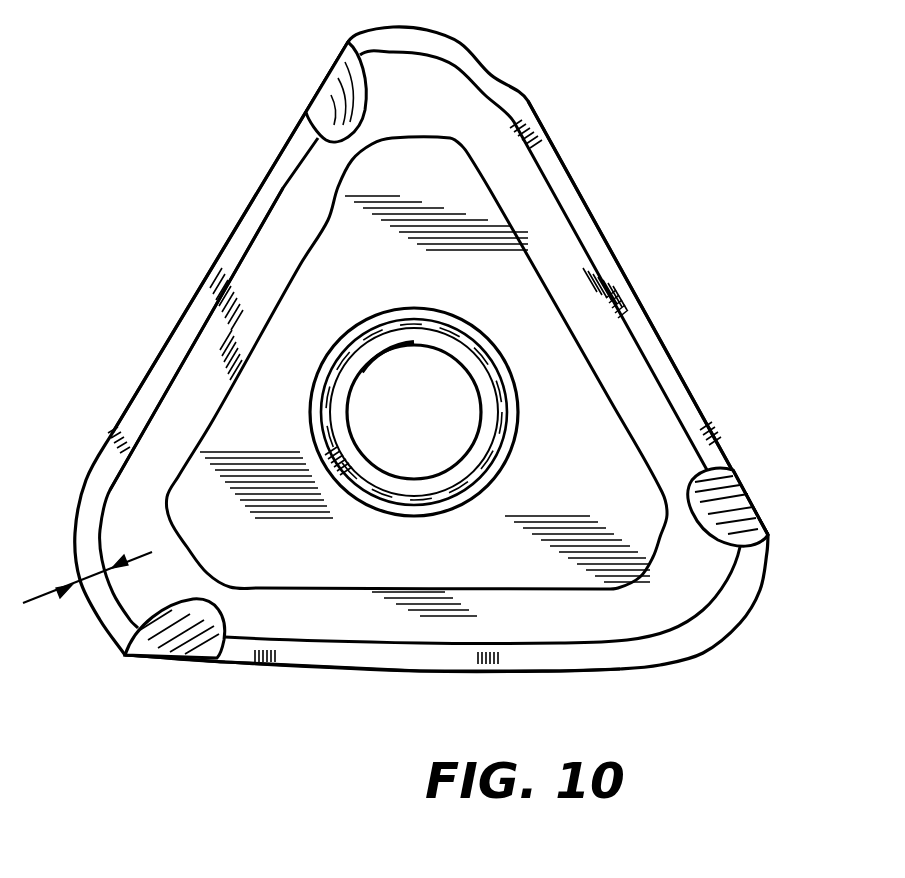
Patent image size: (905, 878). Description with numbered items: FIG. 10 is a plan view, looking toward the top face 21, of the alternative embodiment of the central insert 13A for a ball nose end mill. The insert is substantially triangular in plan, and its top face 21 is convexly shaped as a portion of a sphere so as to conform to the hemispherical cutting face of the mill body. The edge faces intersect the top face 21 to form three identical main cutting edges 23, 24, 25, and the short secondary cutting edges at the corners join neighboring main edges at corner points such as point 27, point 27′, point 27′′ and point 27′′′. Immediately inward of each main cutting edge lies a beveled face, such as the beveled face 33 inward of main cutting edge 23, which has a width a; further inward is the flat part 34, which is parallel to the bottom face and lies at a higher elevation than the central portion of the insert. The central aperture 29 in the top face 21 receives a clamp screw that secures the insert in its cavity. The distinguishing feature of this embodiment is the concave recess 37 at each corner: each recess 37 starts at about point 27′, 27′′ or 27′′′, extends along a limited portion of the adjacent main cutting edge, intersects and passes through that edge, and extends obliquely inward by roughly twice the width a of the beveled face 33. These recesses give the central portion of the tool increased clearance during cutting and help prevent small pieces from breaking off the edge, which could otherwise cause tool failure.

The central insert 13A is at (622, 246).
The top face 21 is at (307, 272).
The main cutting edge 23 is at (263, 167).
The main cutting edge 24 is at (662, 327).
The main cutting edge 25 is at (282, 672).
The corner point 27 is at (735, 468).
The intersection point 27′ is at (768, 540).
The intersection point 27′′ is at (126, 657).
The intersection point 27′′′ is at (349, 41).
The central hole 29 is at (440, 365).
The beveled face 33 is at (577, 207).
The flat part 34 is at (183, 393).
The recess 37 is at (747, 517).
The width of beveled face a is at (97, 577).